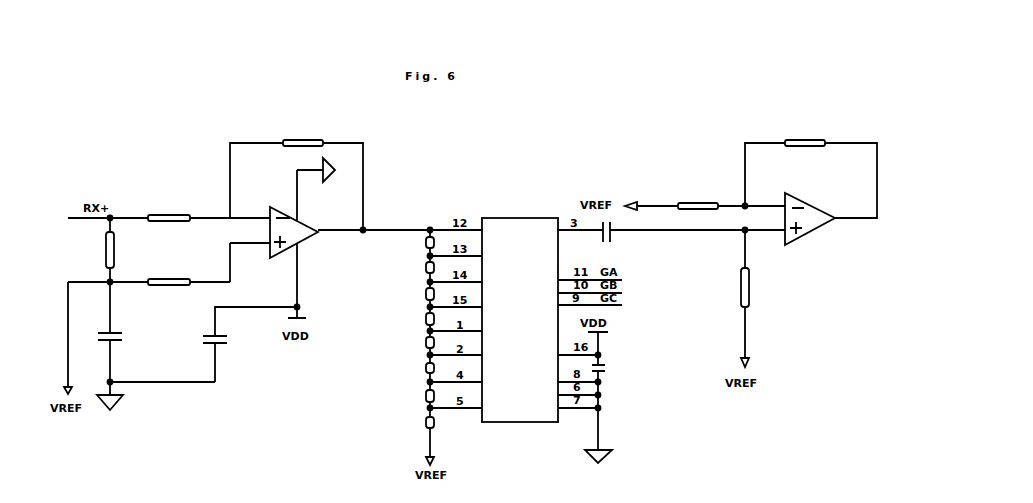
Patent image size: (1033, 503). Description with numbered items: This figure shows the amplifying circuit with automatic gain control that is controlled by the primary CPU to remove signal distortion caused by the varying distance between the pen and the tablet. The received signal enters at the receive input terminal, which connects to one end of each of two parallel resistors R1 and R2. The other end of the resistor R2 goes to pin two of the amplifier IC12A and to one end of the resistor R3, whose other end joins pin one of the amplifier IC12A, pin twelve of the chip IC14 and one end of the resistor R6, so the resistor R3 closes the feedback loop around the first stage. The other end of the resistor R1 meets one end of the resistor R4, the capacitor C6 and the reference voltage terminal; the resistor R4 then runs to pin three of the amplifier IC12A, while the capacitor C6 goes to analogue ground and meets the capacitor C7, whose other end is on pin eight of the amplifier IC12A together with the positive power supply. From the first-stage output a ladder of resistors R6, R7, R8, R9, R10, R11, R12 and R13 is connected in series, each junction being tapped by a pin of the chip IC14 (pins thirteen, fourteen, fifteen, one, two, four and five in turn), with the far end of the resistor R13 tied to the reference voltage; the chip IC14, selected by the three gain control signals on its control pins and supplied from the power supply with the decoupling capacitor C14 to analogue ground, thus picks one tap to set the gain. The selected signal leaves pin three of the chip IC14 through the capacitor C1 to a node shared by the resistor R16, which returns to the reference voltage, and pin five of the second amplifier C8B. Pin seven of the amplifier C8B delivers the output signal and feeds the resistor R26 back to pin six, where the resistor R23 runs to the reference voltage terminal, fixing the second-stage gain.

The amplifier IC12A is at (288, 232).
The resistor R1 is at (123, 250).
The resistor R2 is at (169, 209).
The resistor R3 is at (303, 131).
The resistor R4 is at (169, 295).
The capacitor C6 is at (118, 338).
The capacitor C7 is at (250, 344).
The chip IC14 is at (520, 300).
The resistor R6 is at (413, 243).
The resistor R7 is at (413, 269).
The resistor R8 is at (413, 294).
The resistor R9 is at (413, 319).
The resistor R10 is at (413, 343).
The resistor R11 is at (413, 368).
The resistor R12 is at (413, 395).
The resistor R13 is at (413, 432).
The capacitor C1 is at (613, 239).
The capacitor C14 is at (611, 370).
The amplifier C8B is at (810, 213).
The resistor R23 is at (698, 197).
The resistor R26 is at (804, 135).
The resistor R16 is at (758, 294).